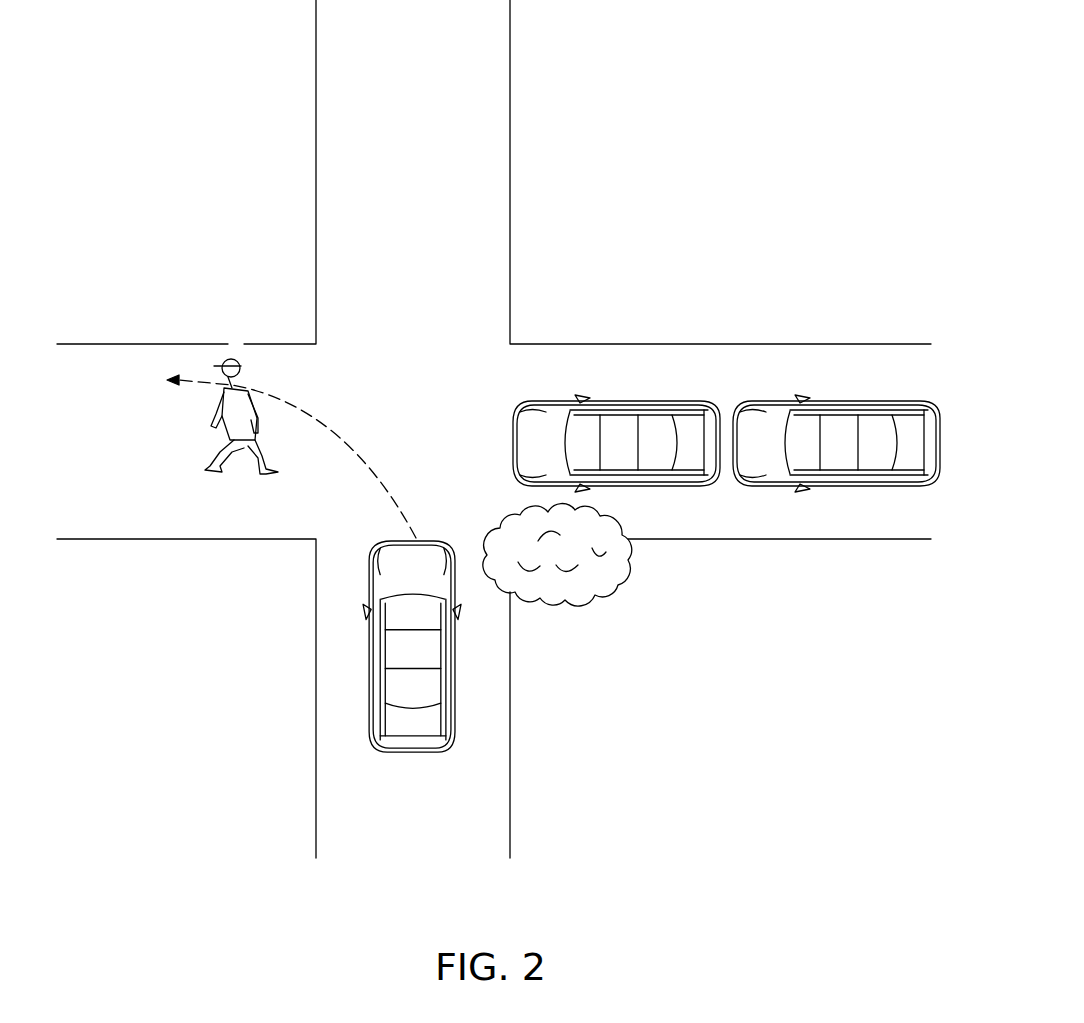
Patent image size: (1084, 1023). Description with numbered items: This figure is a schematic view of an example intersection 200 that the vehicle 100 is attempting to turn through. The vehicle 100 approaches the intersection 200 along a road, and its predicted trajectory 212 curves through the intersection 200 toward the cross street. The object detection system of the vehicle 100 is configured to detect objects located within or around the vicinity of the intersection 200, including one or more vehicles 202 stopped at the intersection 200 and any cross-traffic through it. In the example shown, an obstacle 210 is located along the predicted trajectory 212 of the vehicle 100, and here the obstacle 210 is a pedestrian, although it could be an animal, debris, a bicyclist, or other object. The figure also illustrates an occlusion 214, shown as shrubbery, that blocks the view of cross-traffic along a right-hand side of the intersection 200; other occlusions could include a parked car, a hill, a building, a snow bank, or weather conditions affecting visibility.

The vehicle 100 is at (410, 755).
The intersection 200 is at (674, 241).
The vehicles 202 is at (650, 396).
The obstacle 210 is at (232, 354).
The predicted trajectory 212 is at (362, 455).
The occlusion 214 is at (632, 553).